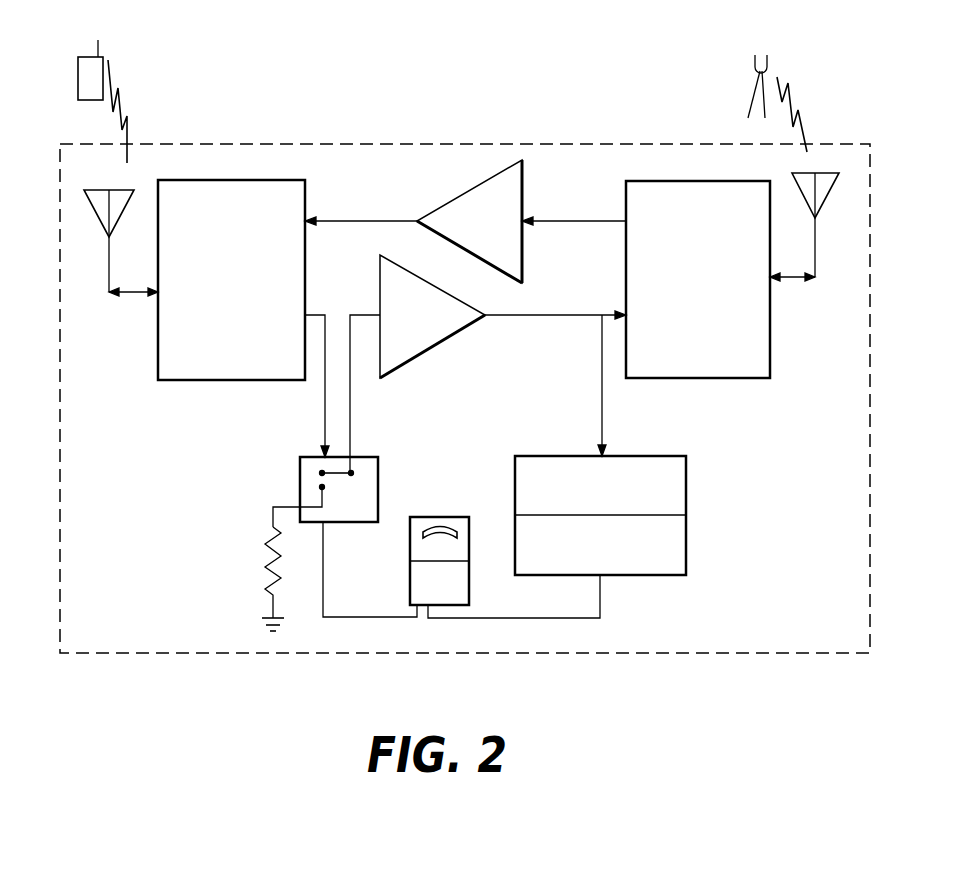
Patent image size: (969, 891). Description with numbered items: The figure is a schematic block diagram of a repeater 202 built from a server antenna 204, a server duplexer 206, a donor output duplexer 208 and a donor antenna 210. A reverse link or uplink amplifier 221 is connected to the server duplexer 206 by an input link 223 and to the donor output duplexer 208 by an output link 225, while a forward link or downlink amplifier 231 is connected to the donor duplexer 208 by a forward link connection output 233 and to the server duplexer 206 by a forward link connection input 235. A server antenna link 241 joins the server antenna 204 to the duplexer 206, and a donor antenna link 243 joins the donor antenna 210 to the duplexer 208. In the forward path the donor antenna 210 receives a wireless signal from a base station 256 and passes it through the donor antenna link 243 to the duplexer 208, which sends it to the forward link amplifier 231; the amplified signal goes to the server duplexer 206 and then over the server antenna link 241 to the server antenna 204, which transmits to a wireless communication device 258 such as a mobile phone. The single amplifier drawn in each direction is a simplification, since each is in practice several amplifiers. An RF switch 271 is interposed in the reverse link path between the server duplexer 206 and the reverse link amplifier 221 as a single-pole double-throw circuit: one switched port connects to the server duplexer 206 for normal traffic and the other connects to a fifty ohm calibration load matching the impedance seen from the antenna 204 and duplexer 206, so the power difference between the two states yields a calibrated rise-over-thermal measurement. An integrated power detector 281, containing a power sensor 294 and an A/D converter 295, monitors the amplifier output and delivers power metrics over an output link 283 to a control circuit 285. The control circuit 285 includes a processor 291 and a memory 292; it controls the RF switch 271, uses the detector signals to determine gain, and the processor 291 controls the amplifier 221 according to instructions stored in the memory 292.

The repeater 202 is at (623, 653).
The server antenna 204 is at (109, 267).
The server duplexer 206 is at (240, 180).
The donor output duplexer 208 is at (687, 181).
The donor antenna 210 is at (815, 258).
The reverse link amplifier 221 is at (443, 348).
The input link 223 is at (362, 313).
The output link 225 is at (522, 305).
The forward link amplifier 231 is at (475, 183).
The forward link connection output 233 is at (575, 218).
The forward link connection input 235 is at (350, 220).
The server antenna link 241 is at (145, 295).
The donor antenna link 243 is at (780, 280).
The base station 256 is at (753, 95).
The wireless communication device 258 is at (97, 100).
The RF switch 271 is at (380, 468).
The integrated power detector 281 is at (664, 452).
The output link 283 is at (600, 598).
The control circuit 285 is at (472, 584).
The processor 291 is at (472, 568).
The memory 292 is at (470, 521).
The power sensor 294 is at (687, 478).
The A/D converter 295 is at (687, 537).